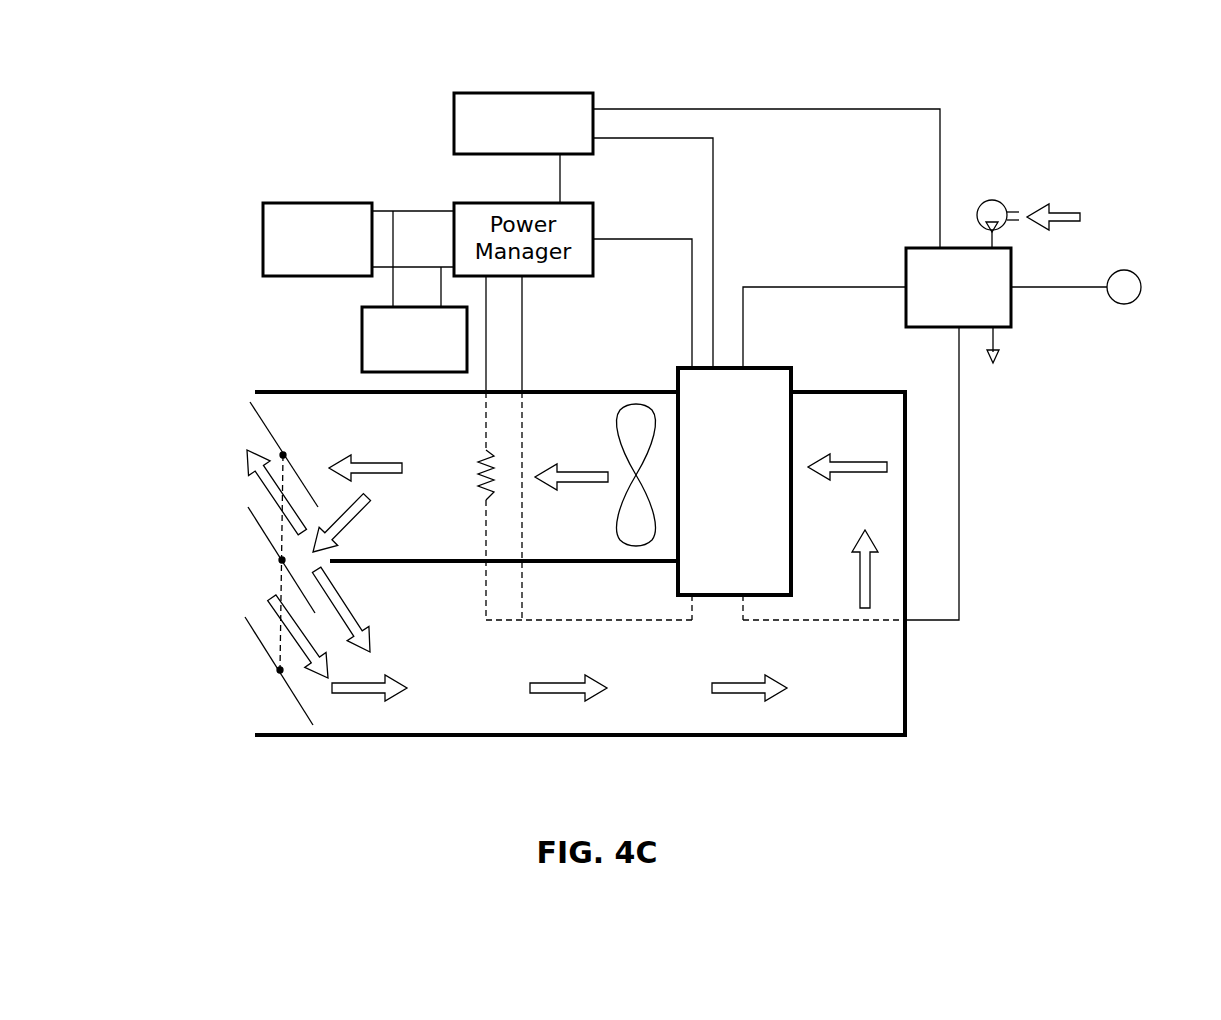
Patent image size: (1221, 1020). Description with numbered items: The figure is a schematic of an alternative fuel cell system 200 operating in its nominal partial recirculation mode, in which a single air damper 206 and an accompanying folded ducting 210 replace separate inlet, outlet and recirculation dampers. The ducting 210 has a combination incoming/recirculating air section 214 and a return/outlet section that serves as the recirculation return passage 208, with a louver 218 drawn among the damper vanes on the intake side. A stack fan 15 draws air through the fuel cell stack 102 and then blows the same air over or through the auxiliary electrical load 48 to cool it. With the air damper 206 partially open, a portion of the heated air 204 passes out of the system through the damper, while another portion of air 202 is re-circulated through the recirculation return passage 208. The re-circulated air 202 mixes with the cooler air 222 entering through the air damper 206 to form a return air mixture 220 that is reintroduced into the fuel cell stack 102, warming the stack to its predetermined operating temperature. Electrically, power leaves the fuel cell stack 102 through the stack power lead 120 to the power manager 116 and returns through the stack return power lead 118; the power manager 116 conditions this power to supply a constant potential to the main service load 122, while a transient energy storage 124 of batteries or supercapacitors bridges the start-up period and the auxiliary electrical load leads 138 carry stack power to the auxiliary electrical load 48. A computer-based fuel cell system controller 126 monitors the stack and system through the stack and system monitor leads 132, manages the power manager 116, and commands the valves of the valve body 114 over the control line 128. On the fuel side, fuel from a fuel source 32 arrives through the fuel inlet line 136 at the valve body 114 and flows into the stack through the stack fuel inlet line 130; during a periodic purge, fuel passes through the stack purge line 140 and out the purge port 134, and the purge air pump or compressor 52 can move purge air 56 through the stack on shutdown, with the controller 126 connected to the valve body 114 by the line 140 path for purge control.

The fuel cell system 200 is at (216, 170).
The fuel cell system controller 126 is at (454, 118).
The power manager 116 is at (585, 203).
The control line to valve body 128 is at (846, 112).
The stack and system monitor leads 132 is at (714, 193).
The stack power lead 120 is at (617, 239).
The main service load 122 is at (263, 245).
The transient energy storage 124 is at (362, 330).
The auxiliary electrical load leads 138 is at (486, 315).
The stack return power lead 118 is at (522, 347).
The valve body 114 is at (922, 248).
The stack fuel inlet line 130 is at (877, 287).
The purge air pump or compressor 52 is at (996, 200).
The purge air 56 is at (1080, 209).
The fuel inlet line 136 is at (1030, 287).
The fuel source 32 is at (1138, 276).
The purge port 134 is at (997, 340).
The stack purge line 140 is at (961, 562).
The fuel cell stack 102 is at (765, 368).
The ducting 210 is at (540, 392).
The combination incoming/recirculating air section 214 is at (481, 703).
The louver 218 is at (308, 410).
The air damper 206 is at (262, 522).
The air entering through the air damper 222 is at (303, 663).
The recirculation return passage 208 is at (303, 567).
The heated air 204 is at (255, 452).
The re-circulated air 202 is at (350, 518).
The auxiliary electrical load 48 is at (483, 455).
The stack fan 15 is at (628, 503).
The return air mixture 220 is at (373, 683).